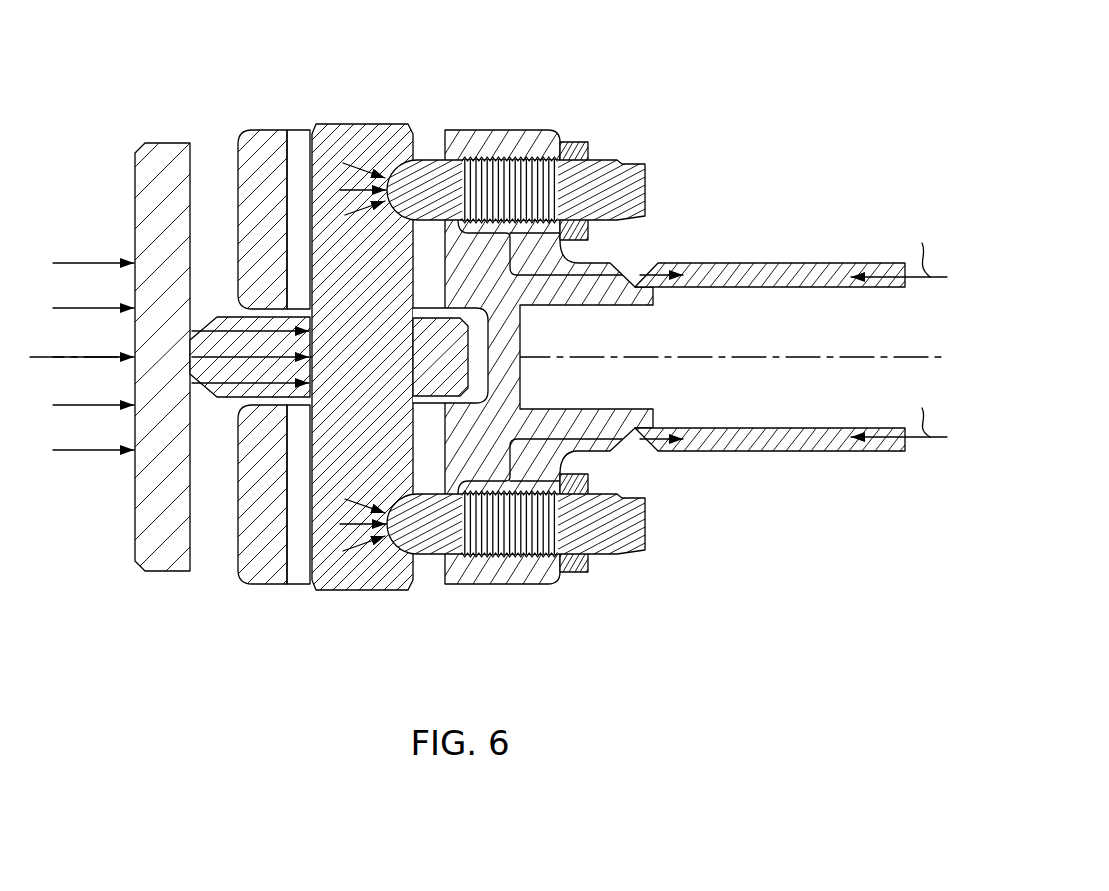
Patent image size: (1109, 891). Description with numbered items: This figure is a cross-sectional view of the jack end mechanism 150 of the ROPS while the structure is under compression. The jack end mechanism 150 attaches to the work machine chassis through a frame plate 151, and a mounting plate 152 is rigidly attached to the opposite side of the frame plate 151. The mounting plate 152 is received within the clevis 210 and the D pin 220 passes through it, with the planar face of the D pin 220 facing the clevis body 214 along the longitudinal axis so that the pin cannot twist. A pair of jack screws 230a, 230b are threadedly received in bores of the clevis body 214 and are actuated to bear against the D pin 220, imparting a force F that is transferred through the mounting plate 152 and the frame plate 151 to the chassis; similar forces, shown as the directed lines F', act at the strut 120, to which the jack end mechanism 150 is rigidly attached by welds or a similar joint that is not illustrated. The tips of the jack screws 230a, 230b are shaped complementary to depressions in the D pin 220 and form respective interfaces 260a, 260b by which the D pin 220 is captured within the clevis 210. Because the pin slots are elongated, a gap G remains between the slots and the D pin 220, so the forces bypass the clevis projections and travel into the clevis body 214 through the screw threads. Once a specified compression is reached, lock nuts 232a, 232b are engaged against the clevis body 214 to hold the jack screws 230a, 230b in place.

The jack end mechanism 150 is at (488, 332).
The frame plate 151 is at (170, 143).
The mounting plate 152 is at (228, 392).
The clevis 210 is at (262, 130).
The D pin 220 is at (364, 124).
The clevis body 214 is at (502, 574).
The jack screw 230a is at (648, 522).
The jack screw 230b is at (648, 187).
The lock nut 232a is at (568, 580).
The lock nut 232b is at (570, 142).
The interface 260a is at (388, 522).
The interface 260b is at (392, 190).
The strut 120 is at (810, 263).
The gap G is at (297, 585).